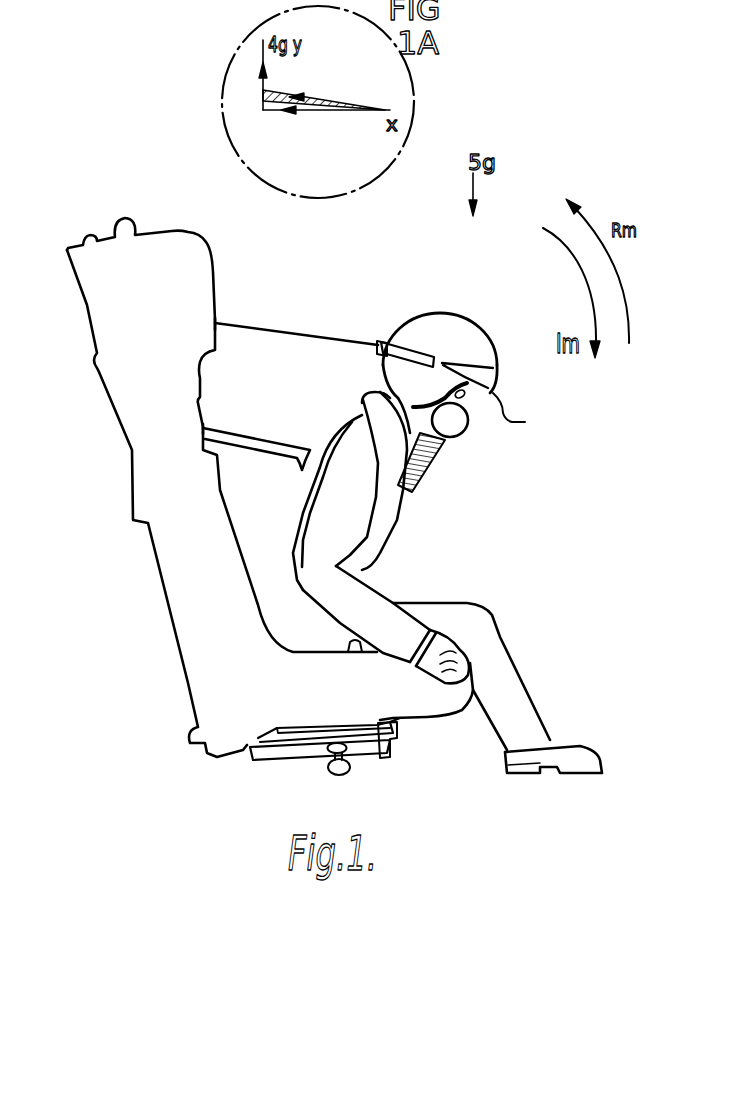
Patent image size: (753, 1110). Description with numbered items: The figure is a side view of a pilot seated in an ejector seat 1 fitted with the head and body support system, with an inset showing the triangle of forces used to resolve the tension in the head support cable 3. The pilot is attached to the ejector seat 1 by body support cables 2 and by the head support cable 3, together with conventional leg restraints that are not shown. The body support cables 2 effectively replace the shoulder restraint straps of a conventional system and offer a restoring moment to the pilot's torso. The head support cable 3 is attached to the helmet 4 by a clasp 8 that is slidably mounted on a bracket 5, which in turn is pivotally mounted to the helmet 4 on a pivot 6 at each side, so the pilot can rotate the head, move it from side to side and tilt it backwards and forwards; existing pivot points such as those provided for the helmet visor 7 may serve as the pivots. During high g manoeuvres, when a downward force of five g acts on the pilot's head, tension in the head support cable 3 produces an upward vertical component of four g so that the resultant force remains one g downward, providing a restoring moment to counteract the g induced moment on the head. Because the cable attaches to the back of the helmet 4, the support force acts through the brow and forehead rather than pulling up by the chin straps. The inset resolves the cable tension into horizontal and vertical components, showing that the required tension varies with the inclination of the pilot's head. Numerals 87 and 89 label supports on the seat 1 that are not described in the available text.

In FIG. 1, the ejector seat 1 is at (176, 302).
In FIG. 1, the body support cables 2 is at (266, 426).
In FIG. 1A, the head support cable 3 is at (320, 96).
In FIG. 1, the head support cable 3 is at (318, 330).
In FIG. 1, the helmet 4 is at (488, 326).
In FIG. 1, the bracket 5 is at (420, 340).
In FIG. 1, the pivot 6 is at (444, 341).
In FIG. 1, the helmet visor 7 is at (519, 417).
In FIG. 1, the clasp 8 is at (383, 342).
In FIG. 1, the backrest upper support 87 is at (216, 323).
In FIG. 1, the backrest lower support 89 is at (203, 425).